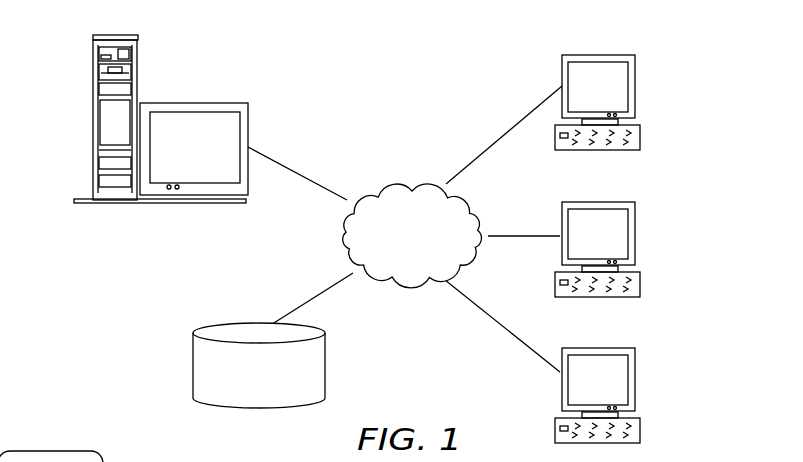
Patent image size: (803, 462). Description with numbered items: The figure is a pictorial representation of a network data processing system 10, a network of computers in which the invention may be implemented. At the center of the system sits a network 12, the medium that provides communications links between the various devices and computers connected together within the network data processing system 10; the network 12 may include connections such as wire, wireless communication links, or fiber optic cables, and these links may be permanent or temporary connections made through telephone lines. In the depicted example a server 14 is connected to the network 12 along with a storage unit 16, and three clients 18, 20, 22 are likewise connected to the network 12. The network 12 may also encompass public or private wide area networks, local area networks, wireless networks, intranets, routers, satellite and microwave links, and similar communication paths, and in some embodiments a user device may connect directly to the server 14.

The network data processing system 10 is at (336, 67).
The network 12 is at (382, 185).
The server 14 is at (92, 118).
The storage unit 16 is at (192, 365).
The client 18 is at (636, 88).
The client 20 is at (637, 235).
The client 22 is at (636, 380).